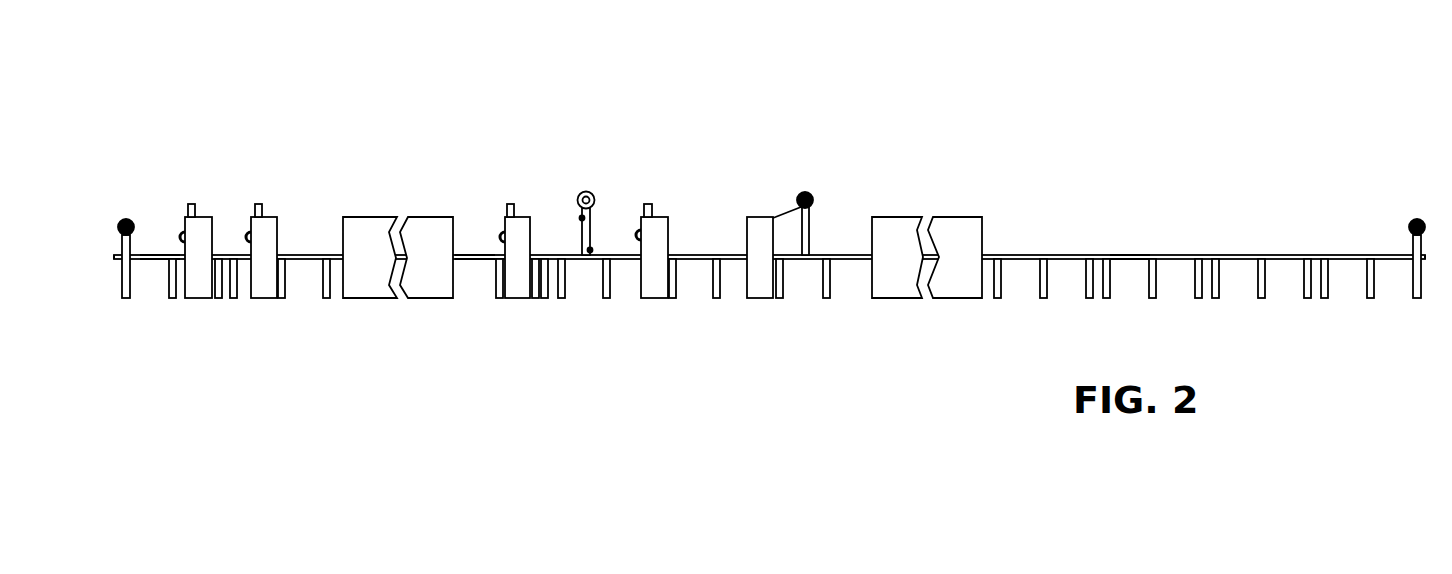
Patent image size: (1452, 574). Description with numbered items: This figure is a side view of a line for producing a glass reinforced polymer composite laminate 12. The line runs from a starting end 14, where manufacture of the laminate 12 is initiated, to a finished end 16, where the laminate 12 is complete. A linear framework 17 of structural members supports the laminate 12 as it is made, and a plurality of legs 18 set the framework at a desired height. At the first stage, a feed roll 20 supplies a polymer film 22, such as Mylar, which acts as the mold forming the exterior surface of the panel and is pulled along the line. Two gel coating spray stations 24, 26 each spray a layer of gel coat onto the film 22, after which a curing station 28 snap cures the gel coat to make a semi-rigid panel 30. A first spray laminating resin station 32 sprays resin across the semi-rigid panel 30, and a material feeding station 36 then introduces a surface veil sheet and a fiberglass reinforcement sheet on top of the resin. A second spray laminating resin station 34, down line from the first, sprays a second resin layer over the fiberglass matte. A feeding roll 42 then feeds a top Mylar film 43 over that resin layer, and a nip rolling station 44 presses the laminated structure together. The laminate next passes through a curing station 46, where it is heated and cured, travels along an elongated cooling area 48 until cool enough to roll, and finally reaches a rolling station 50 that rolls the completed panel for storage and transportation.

The glass reinforced polymer composite laminate 12 is at (1068, 255).
The starting end 14 is at (120, 305).
The finished end 16 is at (1431, 272).
The linear framework 17 is at (1021, 262).
The legs 18 is at (281, 293).
The feed roll 20 is at (133, 207).
The polymer film 22 is at (153, 252).
The gel coating spray station 24 is at (213, 200).
The gel coating spray station 26 is at (277, 200).
The curing station 28 is at (378, 207).
The semi-rigid panel 30 is at (471, 250).
The spray laminating resin station 32 is at (527, 200).
The spray laminating resin station 34 is at (667, 207).
The material feeding station 36 is at (592, 182).
The feeding roll 42 is at (823, 182).
The top Mylar film 43 is at (787, 217).
The nip rolling station 44 is at (757, 207).
The curing station 46 is at (968, 212).
The cooling area 48 is at (1130, 255).
The rolling station 50 is at (1407, 215).